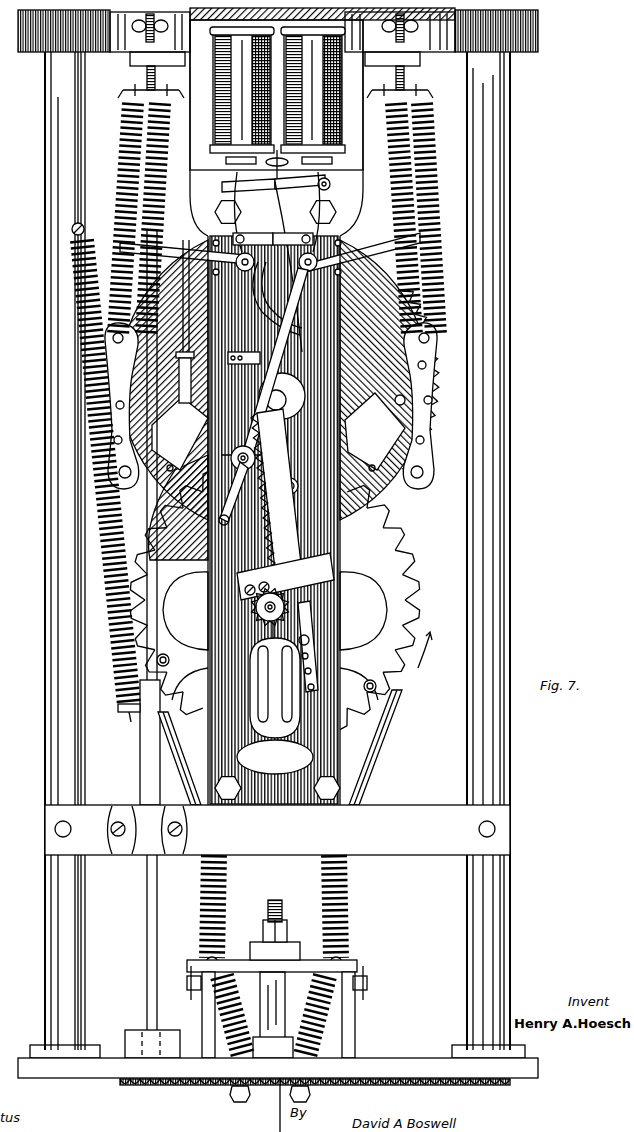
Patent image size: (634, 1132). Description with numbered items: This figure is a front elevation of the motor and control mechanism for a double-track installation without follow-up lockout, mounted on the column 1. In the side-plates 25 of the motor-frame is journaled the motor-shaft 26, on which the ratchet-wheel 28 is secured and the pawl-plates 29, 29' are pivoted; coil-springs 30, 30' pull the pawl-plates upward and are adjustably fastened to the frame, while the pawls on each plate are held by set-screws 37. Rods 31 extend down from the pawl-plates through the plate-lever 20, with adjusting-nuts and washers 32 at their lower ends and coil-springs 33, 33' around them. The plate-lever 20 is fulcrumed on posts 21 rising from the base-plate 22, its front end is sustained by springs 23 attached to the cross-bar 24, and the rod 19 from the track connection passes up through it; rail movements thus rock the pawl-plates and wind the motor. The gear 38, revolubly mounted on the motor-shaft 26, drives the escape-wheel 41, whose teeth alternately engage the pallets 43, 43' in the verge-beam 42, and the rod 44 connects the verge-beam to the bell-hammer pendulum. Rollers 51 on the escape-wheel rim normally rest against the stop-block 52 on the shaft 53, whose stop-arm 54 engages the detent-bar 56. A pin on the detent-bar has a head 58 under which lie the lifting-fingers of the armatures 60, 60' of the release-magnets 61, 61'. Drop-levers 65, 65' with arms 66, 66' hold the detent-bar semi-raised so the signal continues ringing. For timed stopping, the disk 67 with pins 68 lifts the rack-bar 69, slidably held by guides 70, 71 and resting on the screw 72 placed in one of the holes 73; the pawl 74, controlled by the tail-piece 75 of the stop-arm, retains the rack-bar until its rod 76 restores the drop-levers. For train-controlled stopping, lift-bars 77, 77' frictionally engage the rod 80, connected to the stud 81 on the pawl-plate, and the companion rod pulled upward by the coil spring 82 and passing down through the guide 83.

The column 1 is at (130, 1082).
The rod 19 is at (280, 1110).
The plate-lever 20 is at (352, 962).
The posts 21 is at (203, 1028).
The base-plate 22 is at (400, 1066).
The springs 23 is at (226, 905).
The cross-bar 24 is at (277, 830).
The side-plates 25 is at (277, 804).
The motor-shaft 26 is at (288, 400).
The ratchet-wheel 28 is at (372, 352).
The pawl-plate 29 is at (434, 412).
The pawl-plate 29' is at (70, 406).
The coil-spring 30 is at (429, 219).
The coil-spring 30' is at (128, 219).
The rod 31 is at (184, 786).
The adjusting-nuts and washers 32 is at (236, 1090).
The coil-spring 33 is at (350, 1016).
The coil-spring 33' is at (206, 1016).
The set-screw 37 is at (116, 408).
The gear 38 is at (350, 236).
The escape-wheel 41 is at (418, 598).
The verge-beam 42 is at (278, 431).
The pallet 43 is at (370, 457).
The pallet 43' is at (183, 459).
The rod 44 is at (192, 148).
The rollers 51 is at (165, 661).
The stop-block 52 is at (290, 479).
The shaft 53 is at (248, 455).
The stop-arm 54 is at (274, 366).
The detent-bar 56 is at (331, 183).
The head 58 is at (282, 160).
The armature 60 is at (335, 158).
The armature 60' is at (226, 160).
The release-magnet 61 is at (313, 90).
The release-magnet 61' is at (242, 90).
The drop-lever 65 is at (293, 238).
The drop-lever 65' is at (253, 238).
The arm 66 is at (322, 187).
The arm 66' is at (235, 187).
The disk 67 is at (274, 640).
The pins 68 is at (262, 610).
The rack-bar 69 is at (285, 568).
The guide 70 is at (285, 576).
The guide 71 is at (244, 357).
The screw 72 is at (306, 646).
The holes 73 is at (315, 687).
The pawl 74 is at (178, 507).
The tail-piece 75 is at (220, 518).
The rod 76 is at (256, 290).
The lift-bar 77 is at (359, 252).
The lift-bar 77' is at (187, 256).
The rod 80 is at (180, 352).
The stud 81 is at (406, 410).
The coil spring 82 is at (108, 615).
The guide 83 is at (132, 856).